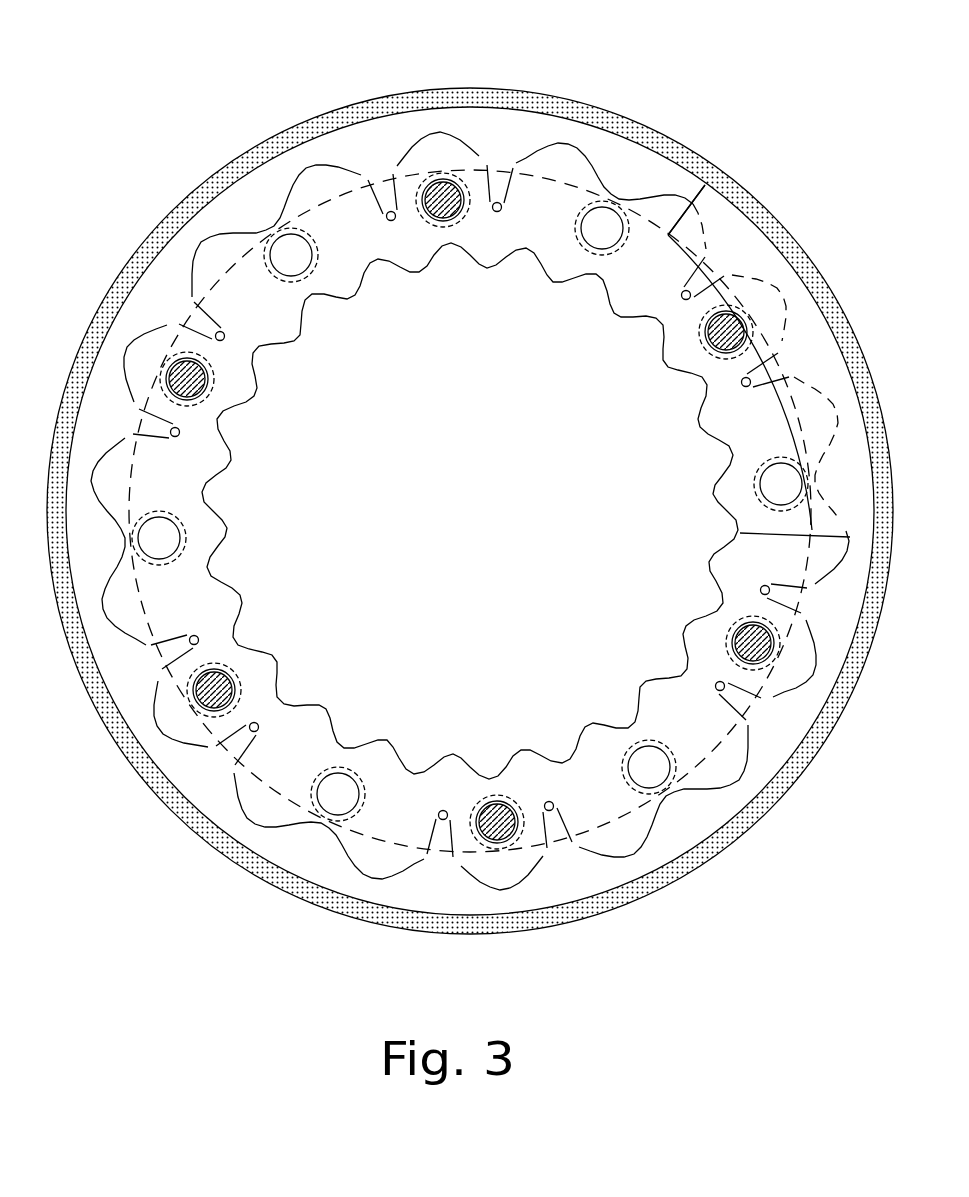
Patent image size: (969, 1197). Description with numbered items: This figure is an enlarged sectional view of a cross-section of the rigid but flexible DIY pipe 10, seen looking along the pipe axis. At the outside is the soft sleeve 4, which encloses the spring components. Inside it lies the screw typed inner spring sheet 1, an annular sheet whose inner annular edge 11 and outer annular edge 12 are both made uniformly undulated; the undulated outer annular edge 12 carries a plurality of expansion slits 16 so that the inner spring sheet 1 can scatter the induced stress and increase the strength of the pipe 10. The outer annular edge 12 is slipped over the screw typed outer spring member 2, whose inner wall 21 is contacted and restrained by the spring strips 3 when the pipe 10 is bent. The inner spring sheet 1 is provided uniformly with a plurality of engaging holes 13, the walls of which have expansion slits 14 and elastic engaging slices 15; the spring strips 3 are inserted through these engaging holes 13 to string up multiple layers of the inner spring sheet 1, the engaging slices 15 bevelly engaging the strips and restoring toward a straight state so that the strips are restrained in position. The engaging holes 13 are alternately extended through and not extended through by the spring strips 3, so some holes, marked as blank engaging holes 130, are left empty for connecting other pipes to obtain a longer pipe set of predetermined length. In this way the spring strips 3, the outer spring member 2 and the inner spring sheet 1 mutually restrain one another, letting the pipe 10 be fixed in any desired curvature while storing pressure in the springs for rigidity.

The rigid but flexible DIY pipe 10 is at (662, 100).
The soft sleeve 4 is at (352, 105).
The screw typed inner spring sheet 1 is at (534, 233).
The inner annular edge 11 is at (410, 277).
The screw typed outer spring member 2 is at (735, 236).
The inner wall 21 is at (668, 235).
The outer annular edge 12 is at (481, 150).
The engaging holes 13 is at (168, 357).
The spring strips 3 is at (498, 834).
The blank engaging holes 130 is at (287, 250).
The expansion slits 14 is at (645, 792).
The elastic engaging slices 15 is at (314, 812).
The expansion slits 16 is at (248, 726).